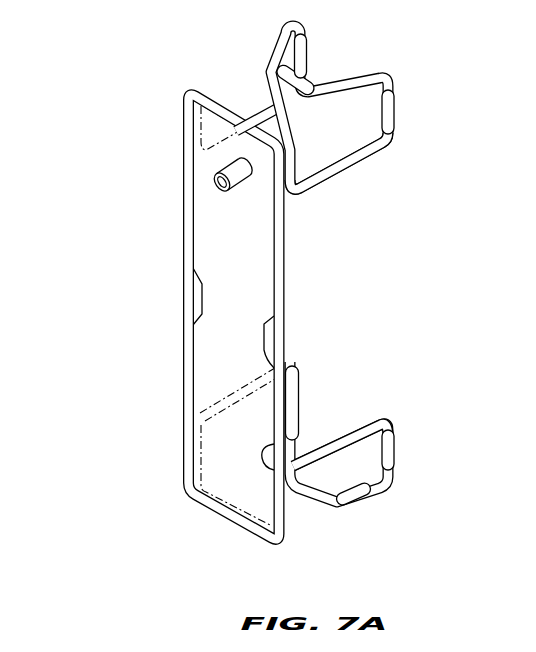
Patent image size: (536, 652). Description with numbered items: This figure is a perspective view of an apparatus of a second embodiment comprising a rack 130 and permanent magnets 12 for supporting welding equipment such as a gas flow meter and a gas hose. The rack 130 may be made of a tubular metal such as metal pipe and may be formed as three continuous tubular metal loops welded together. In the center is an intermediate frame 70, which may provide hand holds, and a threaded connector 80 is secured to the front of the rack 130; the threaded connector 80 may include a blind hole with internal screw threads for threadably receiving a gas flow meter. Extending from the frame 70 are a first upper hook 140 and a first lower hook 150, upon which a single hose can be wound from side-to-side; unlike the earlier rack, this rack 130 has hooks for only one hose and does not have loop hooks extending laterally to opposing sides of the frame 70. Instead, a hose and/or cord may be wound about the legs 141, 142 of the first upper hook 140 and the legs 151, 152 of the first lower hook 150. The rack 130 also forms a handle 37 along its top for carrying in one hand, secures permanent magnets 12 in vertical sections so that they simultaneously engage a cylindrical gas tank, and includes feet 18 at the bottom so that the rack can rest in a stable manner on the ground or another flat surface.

The rack 130 is at (106, 116).
The frame 70 is at (185, 238).
The threaded connector 80 is at (236, 191).
The leg 141 is at (272, 108).
The first upper hook 140 is at (375, 152).
The leg 142 is at (350, 170).
The handle 37 is at (318, 73).
The permanent magnet 12 is at (303, 49).
The foot 18 is at (298, 438).
The leg 151 is at (224, 397).
The leg 152 is at (355, 432).
The first lower hook 150 is at (393, 420).